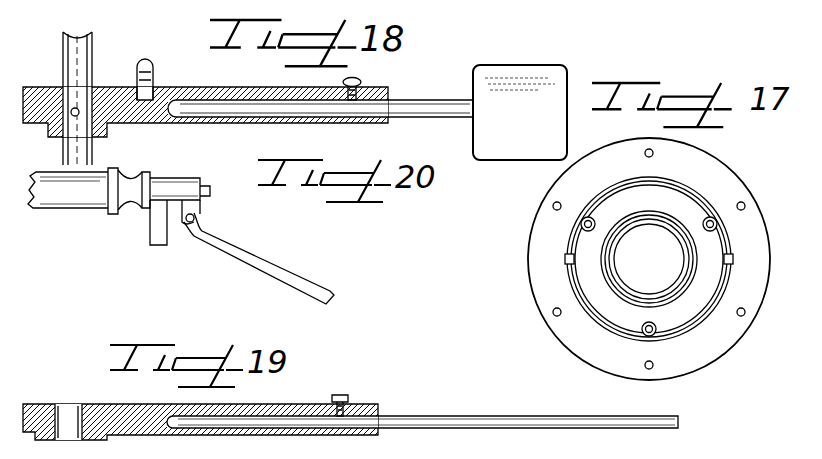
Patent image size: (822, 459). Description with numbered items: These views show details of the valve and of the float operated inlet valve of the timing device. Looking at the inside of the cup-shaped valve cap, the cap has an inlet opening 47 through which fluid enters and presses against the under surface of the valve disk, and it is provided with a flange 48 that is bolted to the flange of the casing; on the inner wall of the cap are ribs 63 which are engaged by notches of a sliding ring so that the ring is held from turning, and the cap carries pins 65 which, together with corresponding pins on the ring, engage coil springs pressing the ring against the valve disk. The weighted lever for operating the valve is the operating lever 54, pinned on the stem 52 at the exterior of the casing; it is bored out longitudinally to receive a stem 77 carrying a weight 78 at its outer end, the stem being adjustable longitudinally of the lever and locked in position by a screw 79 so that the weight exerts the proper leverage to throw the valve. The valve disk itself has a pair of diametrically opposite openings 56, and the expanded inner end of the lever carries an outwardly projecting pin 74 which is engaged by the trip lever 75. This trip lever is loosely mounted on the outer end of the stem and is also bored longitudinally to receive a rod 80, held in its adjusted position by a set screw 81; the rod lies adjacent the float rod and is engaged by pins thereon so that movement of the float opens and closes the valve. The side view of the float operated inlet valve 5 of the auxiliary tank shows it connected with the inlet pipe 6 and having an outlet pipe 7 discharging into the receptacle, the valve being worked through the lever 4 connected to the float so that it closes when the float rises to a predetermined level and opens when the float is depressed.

In FIG. 20, the lever 4 is at (300, 282).
In FIG. 20, the inlet valve 5 is at (163, 178).
In FIG. 20, the inlet pipe 6 is at (50, 180).
In FIG. 20, the outlet pipe 7 is at (157, 228).
In FIG. 17, the inlet opening 47 is at (649, 259).
In FIG. 17, the flange 48 is at (649, 259).
In FIG. 18, the stem 52 is at (78, 46).
In FIG. 18, the operating lever 54 is at (232, 97).
In FIG. 18, the openings 56 is at (72, 109).
In FIG. 17, the ribs 63 is at (565, 259).
In FIG. 17, the pins 65 is at (703, 221).
In FIG. 18, the pin 74 is at (145, 64).
In FIG. 18, the stem 77 is at (438, 100).
In FIG. 18, the weight 78 is at (520, 112).
In FIG. 18, the screw 79 is at (342, 80).
In FIG. 19, the trip lever 75 is at (264, 405).
In FIG. 19, the rod 80 is at (518, 427).
In FIG. 19, the set screw 81 is at (340, 395).